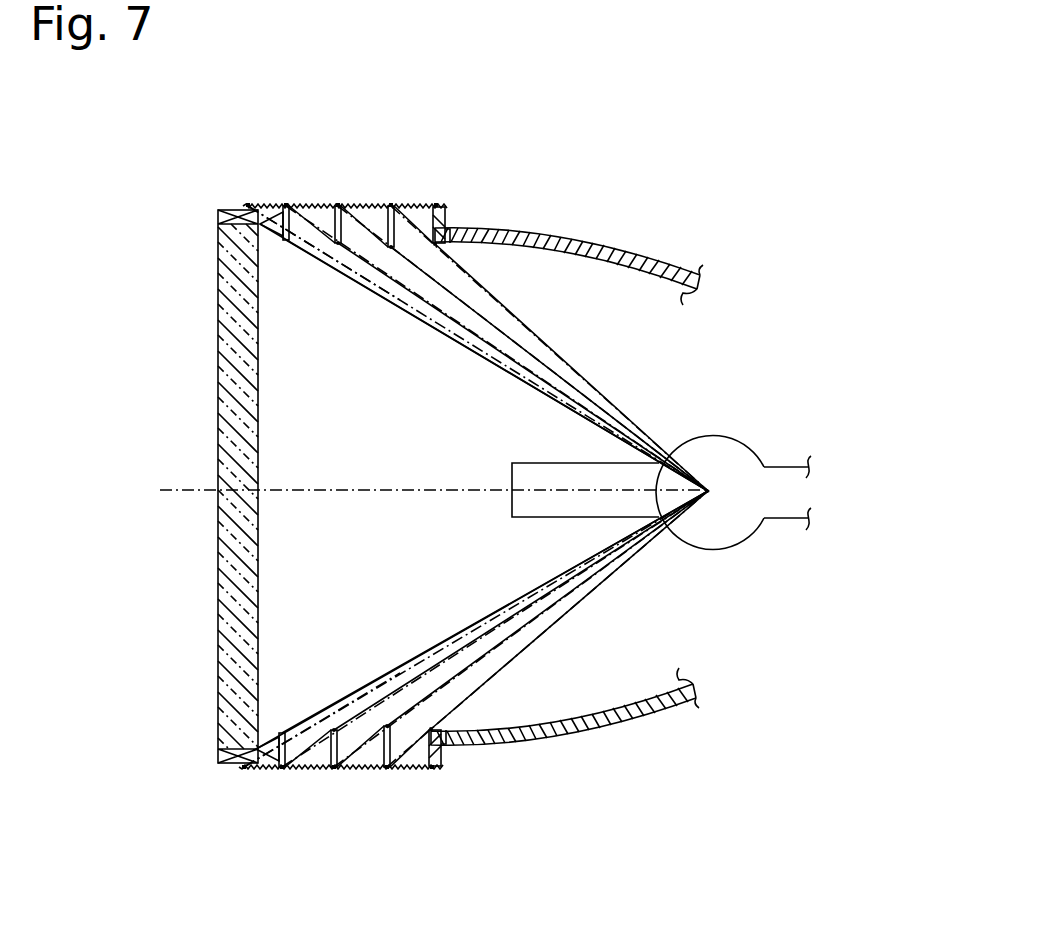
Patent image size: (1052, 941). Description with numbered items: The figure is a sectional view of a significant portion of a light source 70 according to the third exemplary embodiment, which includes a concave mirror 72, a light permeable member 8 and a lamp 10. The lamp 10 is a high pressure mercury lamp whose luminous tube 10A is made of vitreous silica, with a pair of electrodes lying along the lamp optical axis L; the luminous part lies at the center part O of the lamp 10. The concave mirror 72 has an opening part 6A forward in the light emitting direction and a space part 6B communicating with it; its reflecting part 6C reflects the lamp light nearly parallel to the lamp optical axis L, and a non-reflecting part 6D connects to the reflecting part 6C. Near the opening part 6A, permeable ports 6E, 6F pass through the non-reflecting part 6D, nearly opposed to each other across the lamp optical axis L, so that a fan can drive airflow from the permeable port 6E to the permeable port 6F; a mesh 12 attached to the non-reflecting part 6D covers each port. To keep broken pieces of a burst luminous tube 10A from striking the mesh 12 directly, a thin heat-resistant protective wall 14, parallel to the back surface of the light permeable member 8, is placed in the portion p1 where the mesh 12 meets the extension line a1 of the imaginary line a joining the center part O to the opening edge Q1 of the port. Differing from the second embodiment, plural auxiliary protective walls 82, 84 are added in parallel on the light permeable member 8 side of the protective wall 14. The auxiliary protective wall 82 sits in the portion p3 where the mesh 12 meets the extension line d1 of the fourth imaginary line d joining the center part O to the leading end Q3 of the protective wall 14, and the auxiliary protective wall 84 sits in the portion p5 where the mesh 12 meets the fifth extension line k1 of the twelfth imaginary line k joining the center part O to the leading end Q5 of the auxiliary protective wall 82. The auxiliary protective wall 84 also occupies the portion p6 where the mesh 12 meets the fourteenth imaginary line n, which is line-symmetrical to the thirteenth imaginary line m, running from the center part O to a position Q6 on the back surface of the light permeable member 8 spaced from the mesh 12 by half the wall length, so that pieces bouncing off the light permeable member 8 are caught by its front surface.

The light source 70 is at (660, 118).
The concave mirror 72 is at (690, 238).
The lamp 10 is at (714, 414).
The luminous tube 10A is at (785, 467).
The center part O is at (709, 494).
The lamp optical axis L is at (185, 490).
The light permeable member 8 is at (219, 583).
The opening part 6A is at (282, 388).
The space part 6B is at (605, 686).
The reflecting part 6C is at (606, 229).
The non-reflecting part 6D is at (447, 222).
The permeable port 6E is at (437, 207).
The permeable port 6F is at (433, 767).
The mesh 12 is at (310, 206).
The protective wall 14 is at (396, 207).
The auxiliary protective wall 82 is at (343, 207).
The auxiliary protective wall 84 is at (306, 204).
The opening edge Q1 is at (438, 248).
The leading end Q3 is at (392, 250).
The leading end Q5 is at (340, 246).
The position Q6 is at (260, 223).
The portion p1 is at (392, 205).
The portion p3 is at (339, 205).
The portion p5 is at (284, 204).
The portion p6 is at (284, 486).
The fourteenth imaginary line n is at (257, 205).
The imaginary line a is at (522, 318).
The twelfth imaginary line k is at (445, 315).
The thirteenth imaginary line m is at (500, 368).
The fourth imaginary line d is at (550, 398).
The extension line a1 is at (412, 275).
The extension line d1 is at (352, 258).
The fifth extension line k1 is at (302, 255).